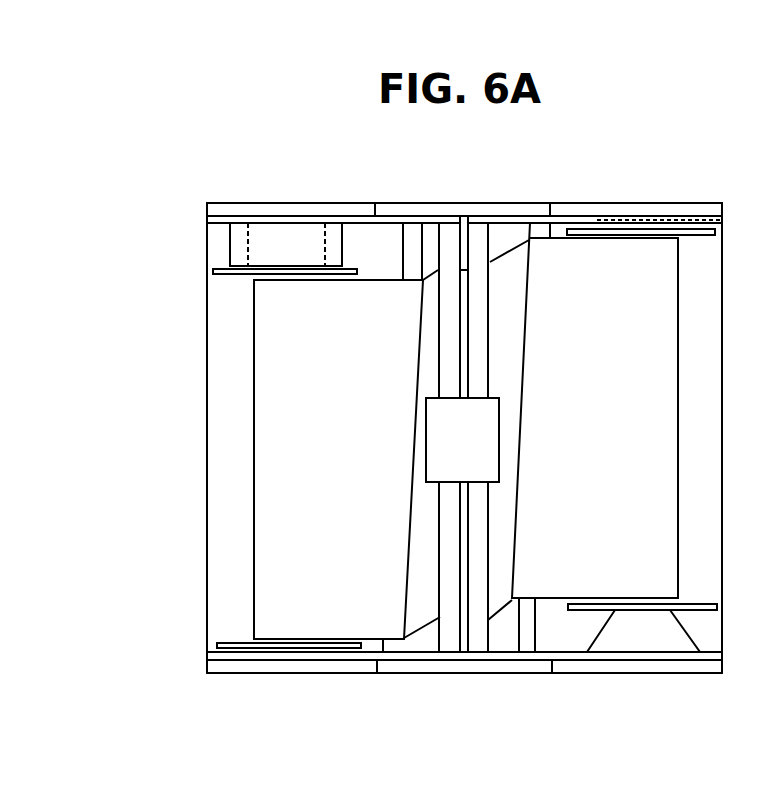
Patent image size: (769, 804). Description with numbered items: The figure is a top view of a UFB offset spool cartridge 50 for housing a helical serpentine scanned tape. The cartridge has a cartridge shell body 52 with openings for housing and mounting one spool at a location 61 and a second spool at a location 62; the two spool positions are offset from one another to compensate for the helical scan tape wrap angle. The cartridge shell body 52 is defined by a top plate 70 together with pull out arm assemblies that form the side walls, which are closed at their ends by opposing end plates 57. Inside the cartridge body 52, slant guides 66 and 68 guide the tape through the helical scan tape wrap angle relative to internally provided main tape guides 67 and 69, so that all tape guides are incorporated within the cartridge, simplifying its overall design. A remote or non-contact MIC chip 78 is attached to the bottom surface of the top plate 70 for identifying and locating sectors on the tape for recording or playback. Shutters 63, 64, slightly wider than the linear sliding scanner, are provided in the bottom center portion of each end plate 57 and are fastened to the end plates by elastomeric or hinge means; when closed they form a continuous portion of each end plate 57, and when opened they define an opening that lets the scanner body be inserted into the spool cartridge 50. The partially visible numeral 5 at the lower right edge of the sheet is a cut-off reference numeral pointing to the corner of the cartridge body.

The UFB spool cartridge 50 is at (193, 193).
The cartridge shell body 52 is at (207, 575).
The housing wall (numeral cut off at sheet edge) 5 is at (728, 670).
The end plate 57 is at (723, 204).
The location 61 is at (228, 243).
The location 62 is at (678, 224).
The shutter 63 is at (473, 212).
The shutter 64 is at (497, 665).
The slant guide 66 is at (383, 643).
The main tape guide 67 is at (440, 627).
The slant guide 68 is at (536, 622).
The main tape guide 69 is at (468, 475).
The top plate 70 is at (235, 478).
The MIC chip 78 is at (443, 440).